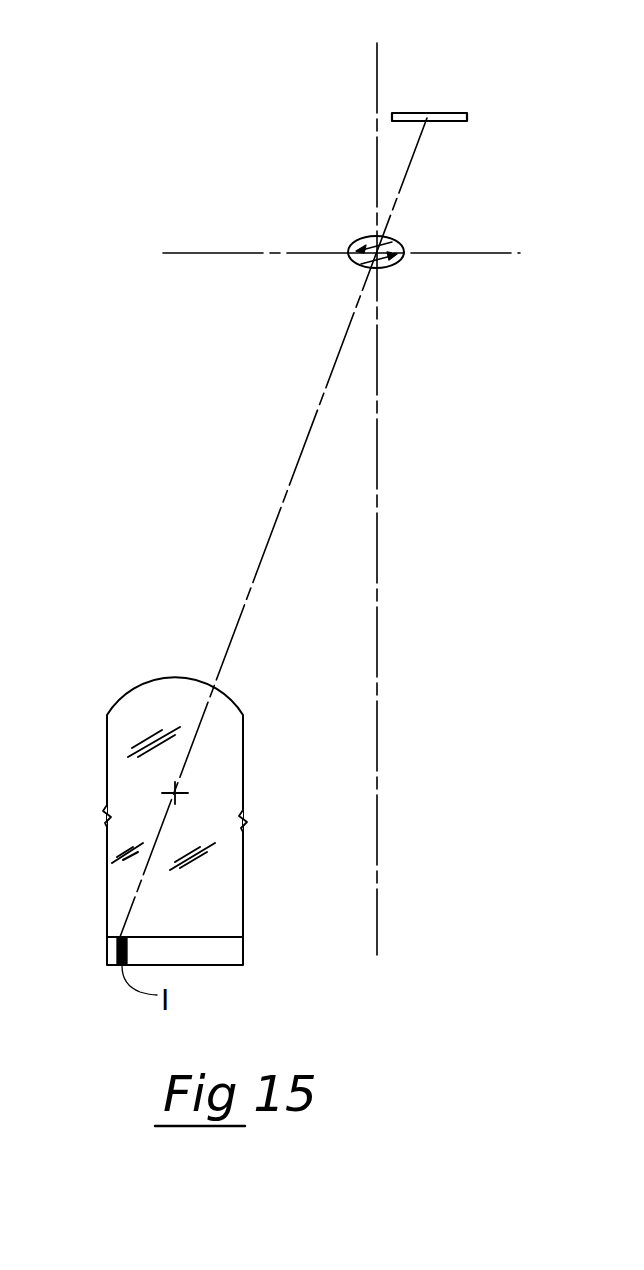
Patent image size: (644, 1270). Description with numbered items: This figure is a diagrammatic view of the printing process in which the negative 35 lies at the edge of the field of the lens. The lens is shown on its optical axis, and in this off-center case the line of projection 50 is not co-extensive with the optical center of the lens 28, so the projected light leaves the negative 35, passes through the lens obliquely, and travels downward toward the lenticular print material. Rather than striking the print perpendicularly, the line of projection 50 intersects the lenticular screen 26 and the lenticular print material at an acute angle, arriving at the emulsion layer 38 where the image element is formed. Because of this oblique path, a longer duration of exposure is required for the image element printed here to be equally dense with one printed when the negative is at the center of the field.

The lenticular screen 26 is at (161, 677).
The optical center of the lens 28 is at (380, 468).
The negative 35 is at (468, 118).
The emulsion layer 38 is at (112, 955).
The line of projection 50 is at (306, 443).